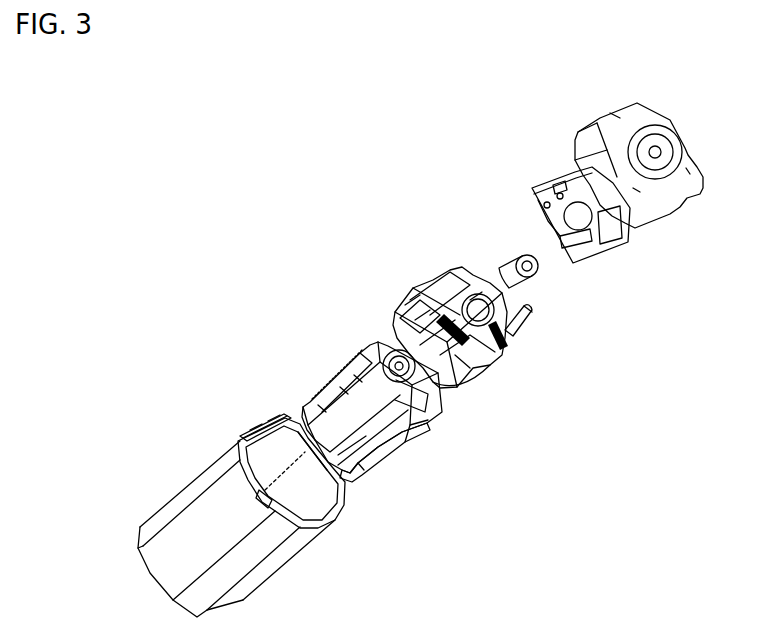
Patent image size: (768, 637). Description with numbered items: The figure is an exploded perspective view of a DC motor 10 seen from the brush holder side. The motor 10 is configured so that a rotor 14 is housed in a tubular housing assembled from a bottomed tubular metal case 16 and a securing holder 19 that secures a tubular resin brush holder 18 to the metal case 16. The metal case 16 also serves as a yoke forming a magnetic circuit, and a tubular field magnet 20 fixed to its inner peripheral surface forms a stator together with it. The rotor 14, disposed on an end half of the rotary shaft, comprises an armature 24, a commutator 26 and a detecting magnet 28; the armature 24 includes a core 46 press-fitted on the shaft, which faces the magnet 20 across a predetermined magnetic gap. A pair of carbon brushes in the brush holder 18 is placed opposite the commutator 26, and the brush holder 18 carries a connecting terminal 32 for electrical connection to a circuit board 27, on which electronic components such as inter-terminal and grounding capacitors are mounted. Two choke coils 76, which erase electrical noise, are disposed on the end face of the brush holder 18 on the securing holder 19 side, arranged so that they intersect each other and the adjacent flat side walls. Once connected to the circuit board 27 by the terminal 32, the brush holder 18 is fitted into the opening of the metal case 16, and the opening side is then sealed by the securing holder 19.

The DC motor 10 is at (308, 209).
The rotor 14 is at (325, 364).
The metal case 16 is at (210, 458).
The brush holder 18 is at (443, 277).
The securing holder 19 is at (660, 200).
The field magnet 20 is at (278, 440).
The armature 24 is at (403, 440).
The commutator 26 is at (423, 417).
The circuit board 27 is at (572, 263).
The detecting magnet 28 is at (507, 258).
The connecting terminal 32 is at (520, 328).
The core 46 is at (350, 448).
The choke coils 76 is at (505, 352).